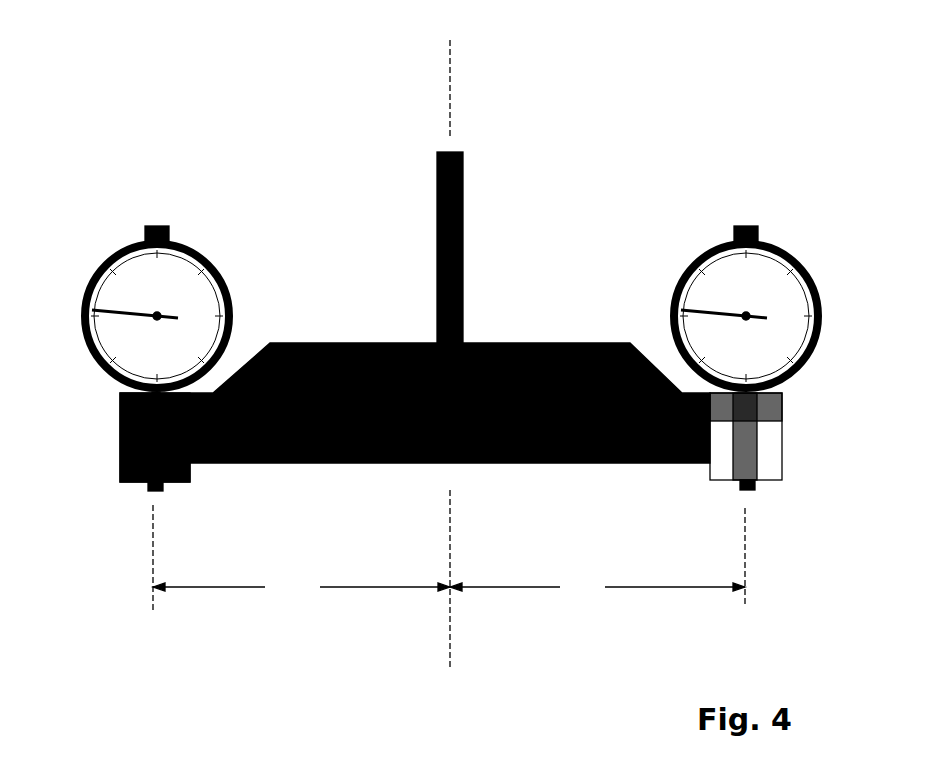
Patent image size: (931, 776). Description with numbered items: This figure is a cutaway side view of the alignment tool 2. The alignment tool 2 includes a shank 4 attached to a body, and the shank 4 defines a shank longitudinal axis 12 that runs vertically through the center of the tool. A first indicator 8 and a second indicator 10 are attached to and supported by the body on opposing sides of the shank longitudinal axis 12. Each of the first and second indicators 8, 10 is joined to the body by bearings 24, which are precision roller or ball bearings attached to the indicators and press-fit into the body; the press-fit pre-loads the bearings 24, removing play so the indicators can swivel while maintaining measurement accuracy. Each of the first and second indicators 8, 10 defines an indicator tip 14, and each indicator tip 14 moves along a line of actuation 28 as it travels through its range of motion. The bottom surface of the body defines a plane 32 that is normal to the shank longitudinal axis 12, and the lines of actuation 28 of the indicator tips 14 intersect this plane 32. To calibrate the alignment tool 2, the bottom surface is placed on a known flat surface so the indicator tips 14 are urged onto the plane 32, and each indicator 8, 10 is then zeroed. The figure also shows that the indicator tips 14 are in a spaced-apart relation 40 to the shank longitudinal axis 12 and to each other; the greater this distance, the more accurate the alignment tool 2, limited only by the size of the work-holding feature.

The alignment tool 2 is at (611, 138).
The shank 4 is at (458, 236).
The first indicator 8 is at (192, 247).
The second indicator 10 is at (693, 263).
The shank longitudinal axis 12 is at (450, 97).
The indicator tip 14 is at (148, 490).
The bearings 24 is at (765, 420).
The line of actuation 28 is at (150, 560).
The plane 32 is at (180, 482).
The spaced-apart relation 40 is at (449, 588).